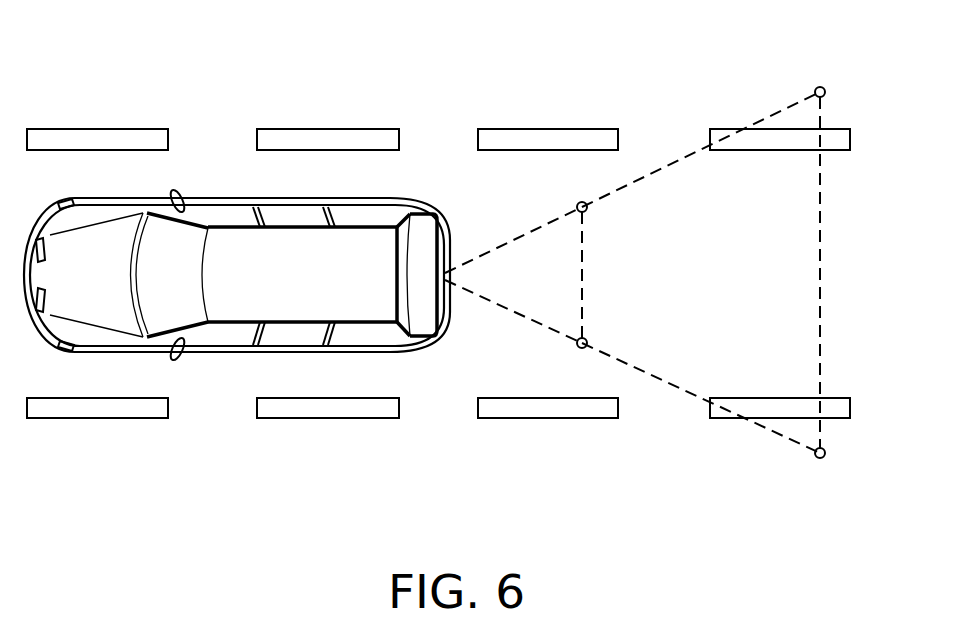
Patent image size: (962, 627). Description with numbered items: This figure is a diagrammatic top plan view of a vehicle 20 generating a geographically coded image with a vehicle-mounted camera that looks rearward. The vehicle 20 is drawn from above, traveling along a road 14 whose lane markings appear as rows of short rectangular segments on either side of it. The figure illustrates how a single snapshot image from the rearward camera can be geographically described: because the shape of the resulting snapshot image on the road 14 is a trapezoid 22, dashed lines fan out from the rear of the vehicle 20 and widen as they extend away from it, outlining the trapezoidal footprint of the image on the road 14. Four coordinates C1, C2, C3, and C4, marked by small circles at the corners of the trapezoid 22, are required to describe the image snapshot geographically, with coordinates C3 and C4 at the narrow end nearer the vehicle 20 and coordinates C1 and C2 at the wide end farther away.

The road 14 is at (202, 153).
The vehicle 20 is at (205, 337).
The trapezoid 22 is at (822, 268).
The coordinate C1 is at (823, 460).
The coordinate C2 is at (824, 88).
The coordinate C3 is at (586, 203).
The coordinate C4 is at (585, 348).